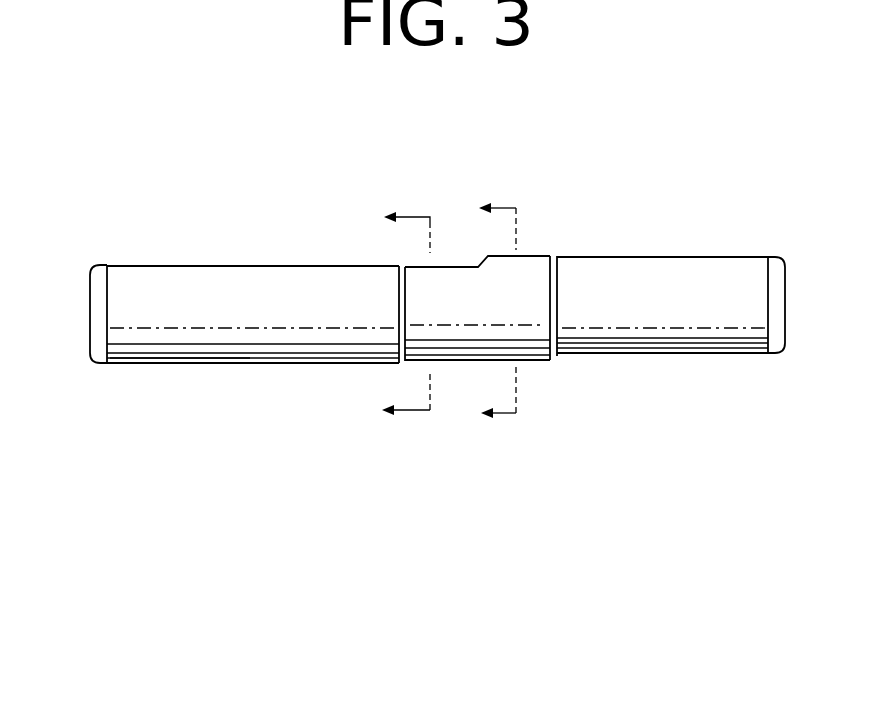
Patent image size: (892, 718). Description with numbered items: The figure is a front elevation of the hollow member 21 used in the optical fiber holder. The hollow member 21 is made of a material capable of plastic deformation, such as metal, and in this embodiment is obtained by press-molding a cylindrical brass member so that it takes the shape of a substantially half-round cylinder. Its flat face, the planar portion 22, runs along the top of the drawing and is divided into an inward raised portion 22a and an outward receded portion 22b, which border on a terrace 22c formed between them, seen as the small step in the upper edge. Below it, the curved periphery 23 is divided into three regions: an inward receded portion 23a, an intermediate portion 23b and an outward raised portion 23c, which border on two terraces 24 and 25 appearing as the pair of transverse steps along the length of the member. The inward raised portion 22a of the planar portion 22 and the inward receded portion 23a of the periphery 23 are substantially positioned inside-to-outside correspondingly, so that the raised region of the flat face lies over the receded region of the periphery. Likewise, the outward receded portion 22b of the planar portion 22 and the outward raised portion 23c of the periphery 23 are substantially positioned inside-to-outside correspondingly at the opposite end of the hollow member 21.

The hollow member 21 is at (146, 240).
The planar portion 22 is at (581, 245).
The inward raised portion 22a is at (677, 257).
The outward receded portion 22b is at (255, 265).
The terrace 22c is at (478, 262).
The periphery 23 is at (274, 372).
The inward receded portion 23a is at (682, 353).
The intermediate portion 23b is at (520, 363).
The outward raised portion 23c is at (176, 366).
The terrace 24 is at (560, 357).
The terrace 25 is at (380, 362).